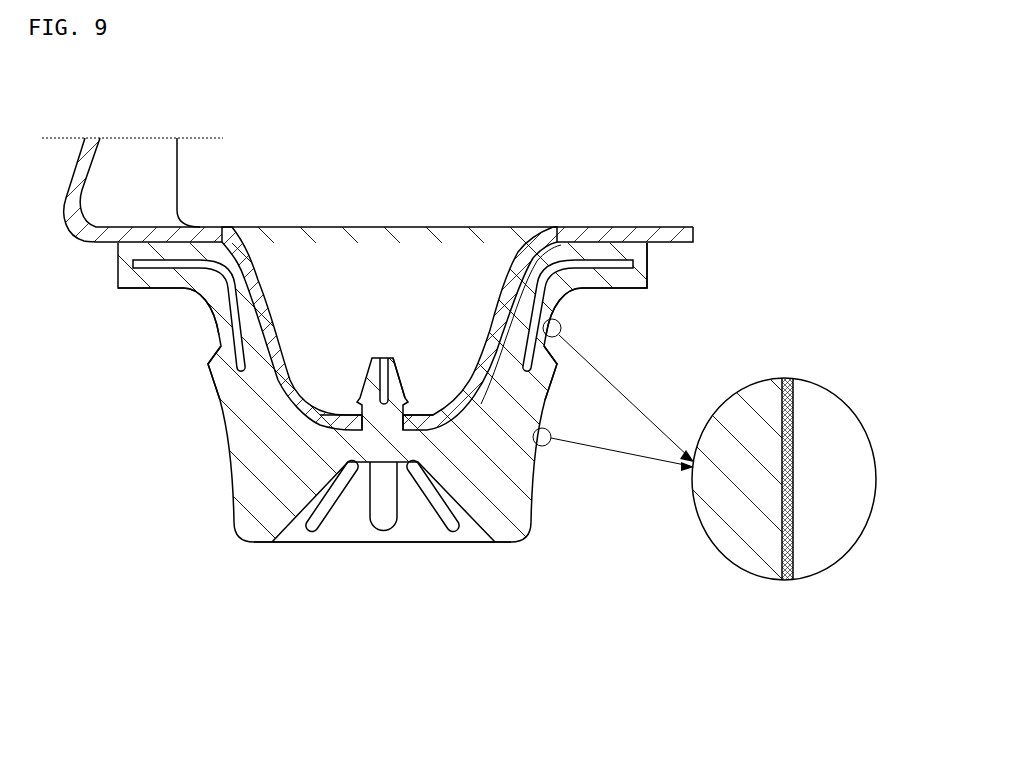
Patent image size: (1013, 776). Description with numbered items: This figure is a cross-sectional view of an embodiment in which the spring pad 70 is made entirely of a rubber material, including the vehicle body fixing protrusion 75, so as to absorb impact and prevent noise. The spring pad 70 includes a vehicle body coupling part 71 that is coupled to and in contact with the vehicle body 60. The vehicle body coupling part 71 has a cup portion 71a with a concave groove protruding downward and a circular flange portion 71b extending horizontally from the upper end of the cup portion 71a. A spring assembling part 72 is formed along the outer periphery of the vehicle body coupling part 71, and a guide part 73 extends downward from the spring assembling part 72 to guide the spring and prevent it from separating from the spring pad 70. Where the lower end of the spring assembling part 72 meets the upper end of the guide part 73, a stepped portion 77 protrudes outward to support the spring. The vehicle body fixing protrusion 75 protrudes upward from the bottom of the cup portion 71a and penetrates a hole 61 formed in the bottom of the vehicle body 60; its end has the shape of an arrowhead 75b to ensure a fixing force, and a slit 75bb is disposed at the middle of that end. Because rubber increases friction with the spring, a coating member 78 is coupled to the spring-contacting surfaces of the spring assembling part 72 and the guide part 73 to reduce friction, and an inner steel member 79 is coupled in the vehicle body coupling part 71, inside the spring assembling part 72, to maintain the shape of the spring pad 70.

The vehicle body 60 is at (487, 257).
The vehicle body coupling part 71 is at (216, 254).
The cup portion 71a is at (410, 443).
The circular flange portion 71b is at (633, 247).
The inner steel member 79 is at (574, 254).
The spring assembling part 72 is at (216, 325).
The stepped portion 77 is at (208, 365).
The guide part 73 is at (260, 498).
The vehicle body fixing protrusion 75 is at (360, 394).
The arrowhead 75b is at (406, 374).
The slit 75bb is at (377, 353).
The hole 61 is at (375, 463).
The spring pad 70 is at (444, 543).
The coating member 78 is at (794, 483).